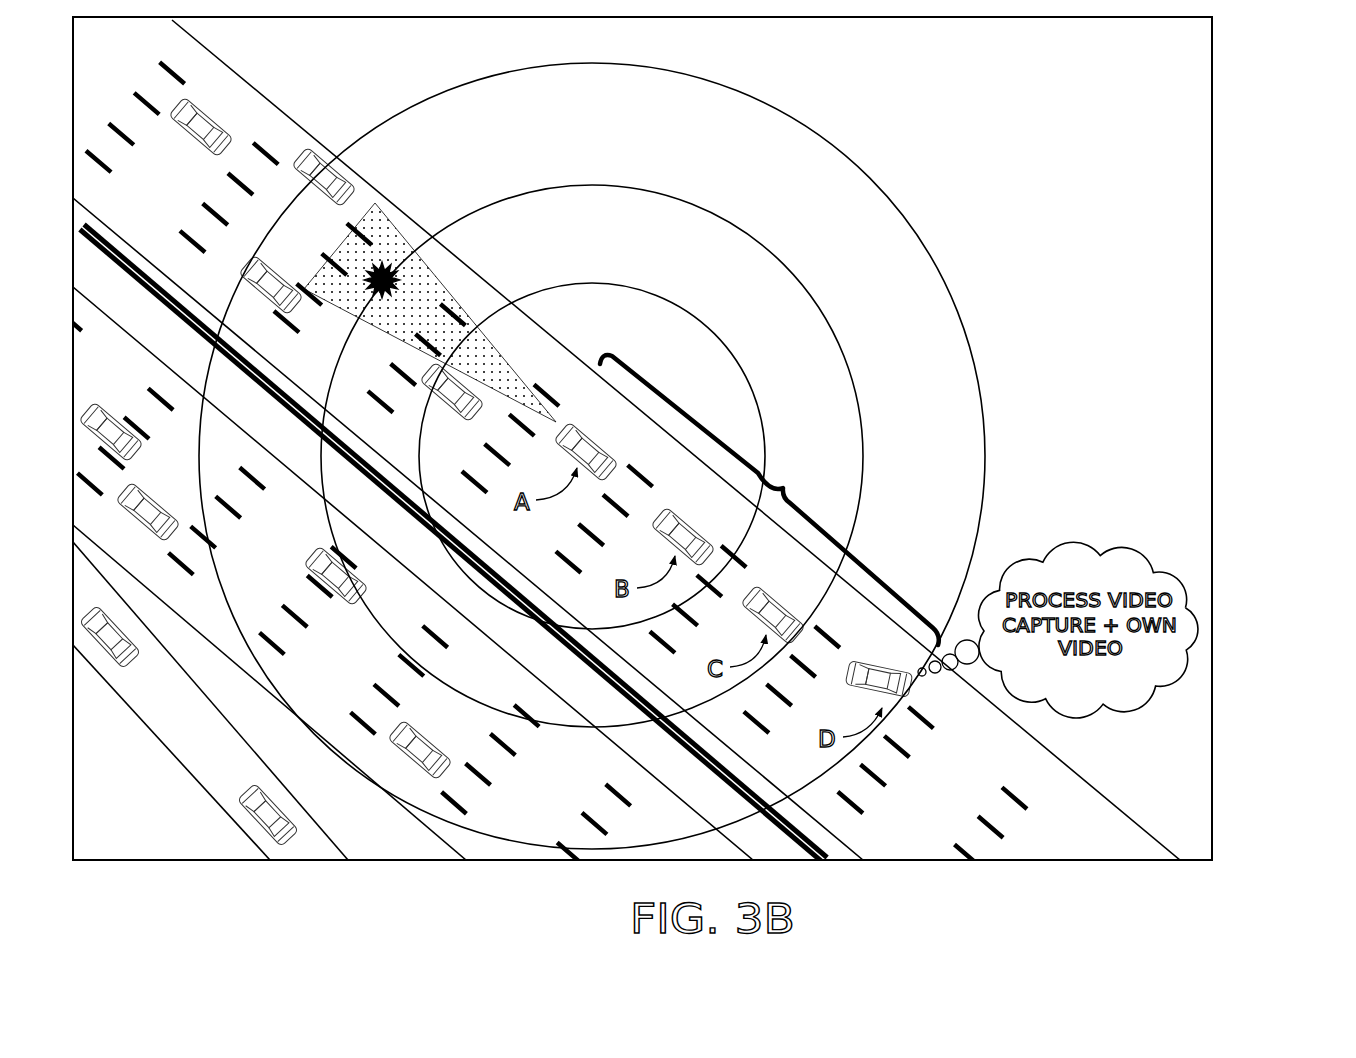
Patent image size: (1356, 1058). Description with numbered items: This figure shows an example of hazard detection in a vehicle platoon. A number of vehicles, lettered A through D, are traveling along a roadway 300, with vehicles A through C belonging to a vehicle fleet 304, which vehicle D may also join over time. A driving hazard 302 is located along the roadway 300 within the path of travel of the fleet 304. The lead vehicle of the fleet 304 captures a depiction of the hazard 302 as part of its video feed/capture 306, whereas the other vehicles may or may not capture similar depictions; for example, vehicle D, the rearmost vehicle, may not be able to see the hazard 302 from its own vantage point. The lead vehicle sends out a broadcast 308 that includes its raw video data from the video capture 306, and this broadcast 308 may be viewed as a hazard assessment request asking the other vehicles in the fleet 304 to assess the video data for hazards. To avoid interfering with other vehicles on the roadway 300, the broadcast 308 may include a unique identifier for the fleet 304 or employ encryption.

The roadway 300 is at (1249, 80).
The driving hazard 302 is at (389, 248).
The vehicle fleet 304 is at (769, 500).
The video feed/capture 306 is at (516, 350).
The broadcast 308 is at (811, 122).